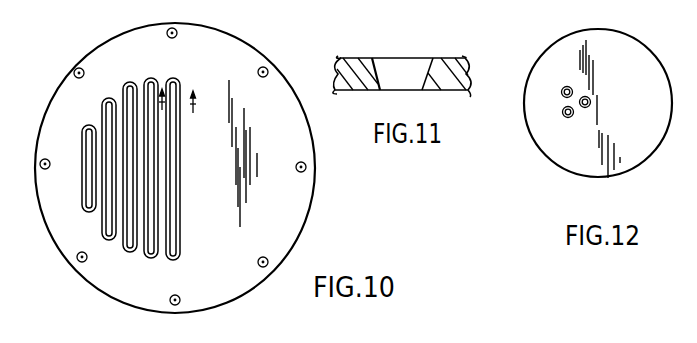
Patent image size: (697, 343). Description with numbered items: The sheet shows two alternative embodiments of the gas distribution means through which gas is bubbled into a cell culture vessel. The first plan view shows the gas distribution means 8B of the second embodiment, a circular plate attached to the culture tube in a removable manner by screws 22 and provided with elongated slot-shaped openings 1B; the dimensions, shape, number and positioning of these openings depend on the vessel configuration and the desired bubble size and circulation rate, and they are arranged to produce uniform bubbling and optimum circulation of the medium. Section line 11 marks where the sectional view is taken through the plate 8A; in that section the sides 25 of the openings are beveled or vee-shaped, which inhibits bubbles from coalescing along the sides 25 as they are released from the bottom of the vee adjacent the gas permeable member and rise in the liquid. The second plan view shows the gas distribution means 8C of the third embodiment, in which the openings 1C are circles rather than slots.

In FIG. 10, the tube sheet plate 8B is at (232, 47).
In FIG. 10, the screws 22 is at (267, 67).
In FIG. 10, the heat exchanger tube loops 1B is at (130, 82).
In FIG. 10, the line 11— 11 is at (179, 107).
In FIG. 11, the plate section 8A is at (448, 60).
In FIG. 11, the sides of the openings 25 is at (382, 72).
In FIG. 12, the tube sheet plate 8C is at (611, 44).
In FIG. 12, the tube ends 1C is at (583, 96).